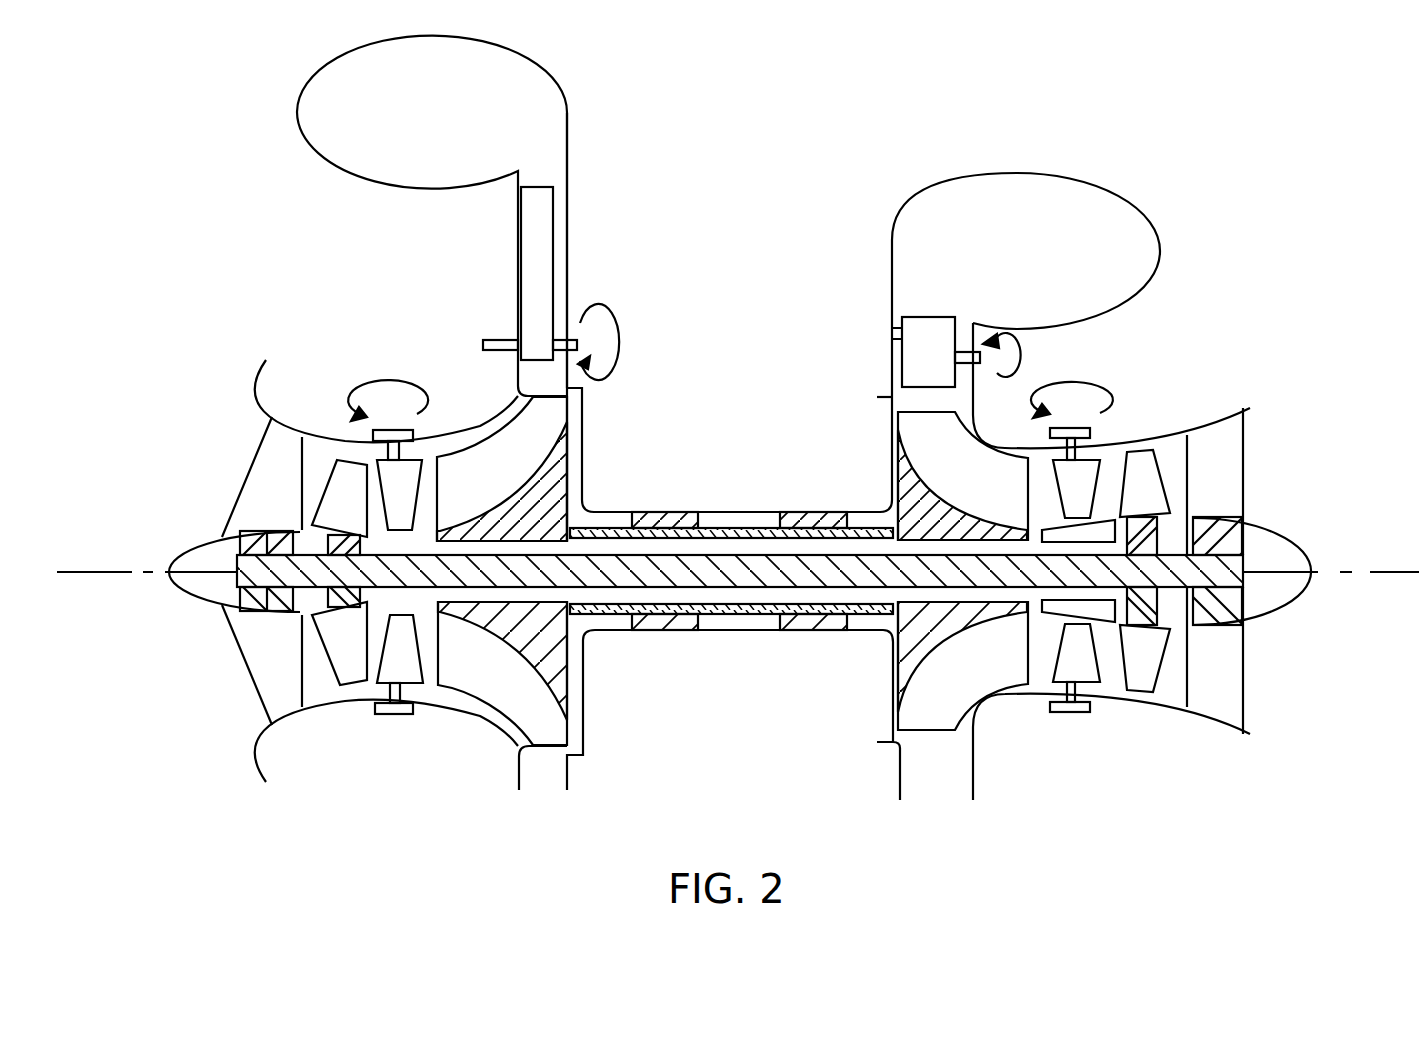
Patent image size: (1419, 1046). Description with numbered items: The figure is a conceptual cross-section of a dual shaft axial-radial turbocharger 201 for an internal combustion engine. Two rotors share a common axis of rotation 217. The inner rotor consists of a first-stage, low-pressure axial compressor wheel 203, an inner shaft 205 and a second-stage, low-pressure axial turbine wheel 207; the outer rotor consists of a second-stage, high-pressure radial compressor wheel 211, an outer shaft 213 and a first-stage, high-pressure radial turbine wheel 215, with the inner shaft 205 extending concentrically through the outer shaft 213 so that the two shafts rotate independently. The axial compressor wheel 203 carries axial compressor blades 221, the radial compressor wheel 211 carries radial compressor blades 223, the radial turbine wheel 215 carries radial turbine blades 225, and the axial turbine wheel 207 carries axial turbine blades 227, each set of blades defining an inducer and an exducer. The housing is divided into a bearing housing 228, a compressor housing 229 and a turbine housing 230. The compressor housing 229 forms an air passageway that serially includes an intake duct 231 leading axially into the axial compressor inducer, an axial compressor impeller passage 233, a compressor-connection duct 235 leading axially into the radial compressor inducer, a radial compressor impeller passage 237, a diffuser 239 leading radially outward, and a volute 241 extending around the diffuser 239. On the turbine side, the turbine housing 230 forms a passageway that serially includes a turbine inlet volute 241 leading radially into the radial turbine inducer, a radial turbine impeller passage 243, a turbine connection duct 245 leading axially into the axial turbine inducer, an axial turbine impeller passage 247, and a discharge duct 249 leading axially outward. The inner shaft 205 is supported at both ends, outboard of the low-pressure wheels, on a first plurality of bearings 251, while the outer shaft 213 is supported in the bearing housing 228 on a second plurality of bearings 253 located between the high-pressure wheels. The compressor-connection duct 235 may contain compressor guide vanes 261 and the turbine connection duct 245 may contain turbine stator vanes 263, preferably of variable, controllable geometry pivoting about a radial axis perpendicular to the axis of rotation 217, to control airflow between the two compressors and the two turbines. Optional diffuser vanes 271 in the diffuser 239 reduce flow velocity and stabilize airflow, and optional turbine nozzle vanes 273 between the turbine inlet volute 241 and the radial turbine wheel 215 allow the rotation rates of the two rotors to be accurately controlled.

The turbocharger 201 is at (1275, 208).
The axial compressor wheel 203 is at (333, 645).
The inner shaft 205 is at (605, 580).
The axial turbine wheel 207 is at (1142, 625).
The radial compressor wheel 211 is at (538, 648).
The outer shaft 213 is at (728, 615).
The radial turbine wheel 215 is at (905, 655).
The axis of rotation 217 is at (1372, 572).
The axial compressor blades 221 is at (268, 709).
The radial compressor blades 223 is at (462, 680).
The radial turbine blades 225 is at (965, 685).
The axial turbine blades 227 is at (1160, 650).
The bearing housing 228 is at (758, 632).
The compressor housing 229 is at (473, 712).
The turbine housing 230 is at (1222, 727).
The intake duct 231 is at (268, 663).
The axial compressor impeller passage 233 is at (352, 450).
The compressor-connection duct 235 is at (404, 538).
The radial compressor impeller passage 237 is at (480, 440).
The diffuser 239 is at (535, 375).
The volute 241 is at (447, 134).
The radial turbine impeller passage 243 is at (935, 452).
The turbine connection duct 245 is at (1055, 620).
The axial turbine impeller passage 247 is at (1150, 470).
The discharge duct 249 is at (1220, 680).
The first plurality of bearings 251 is at (262, 545).
The second plurality of bearings 253 is at (665, 512).
The compressor guide vanes 261 is at (388, 667).
The turbine stator vanes 263 is at (1088, 470).
The diffuser vanes 271 is at (543, 262).
The turbine nozzle vanes 273 is at (903, 355).